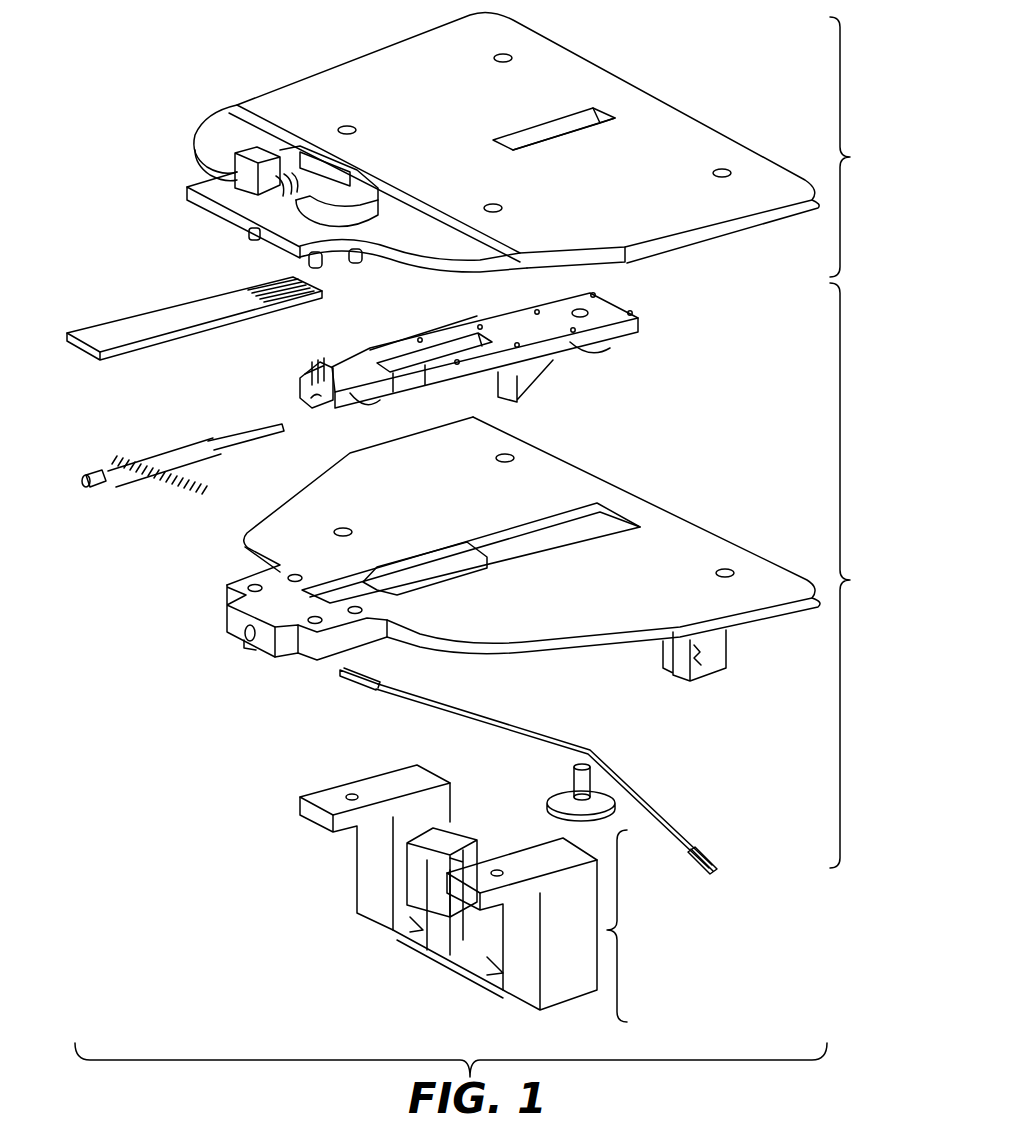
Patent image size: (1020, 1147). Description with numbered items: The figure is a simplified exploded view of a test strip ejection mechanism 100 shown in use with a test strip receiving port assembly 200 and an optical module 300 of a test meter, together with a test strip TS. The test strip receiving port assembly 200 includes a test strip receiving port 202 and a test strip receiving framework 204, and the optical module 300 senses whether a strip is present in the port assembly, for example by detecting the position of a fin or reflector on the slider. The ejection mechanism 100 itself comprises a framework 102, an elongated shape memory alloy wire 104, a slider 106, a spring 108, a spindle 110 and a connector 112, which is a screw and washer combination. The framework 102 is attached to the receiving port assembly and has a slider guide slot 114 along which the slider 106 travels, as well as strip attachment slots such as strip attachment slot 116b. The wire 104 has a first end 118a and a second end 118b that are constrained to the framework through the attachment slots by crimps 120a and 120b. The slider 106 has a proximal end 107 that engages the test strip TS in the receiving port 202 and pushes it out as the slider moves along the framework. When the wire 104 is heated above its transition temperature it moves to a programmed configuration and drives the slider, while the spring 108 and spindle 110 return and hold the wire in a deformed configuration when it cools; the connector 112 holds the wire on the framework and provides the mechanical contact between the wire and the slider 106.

The test strip ejection mechanism 100 is at (863, 575).
The framework 102 is at (673, 547).
The elongated shape memory alloy wire 104 is at (540, 730).
The slider 106 is at (403, 362).
The proximal end 107 is at (309, 396).
The spring 108 is at (140, 478).
The spindle 110 is at (82, 488).
The connector 112 is at (620, 797).
The slider guide slot 114 is at (600, 527).
The strip attachment slot 116b is at (710, 670).
The first end 118a is at (381, 701).
The second end 118b is at (722, 849).
The crimp 120a is at (373, 677).
The crimp 120b is at (713, 873).
The test strip receiving port assembly 200 is at (863, 147).
The test strip receiving port 202 is at (247, 157).
The test strip receiving framework 204 is at (655, 120).
The optical module 300 is at (492, 893).
The test strip TS is at (150, 330).